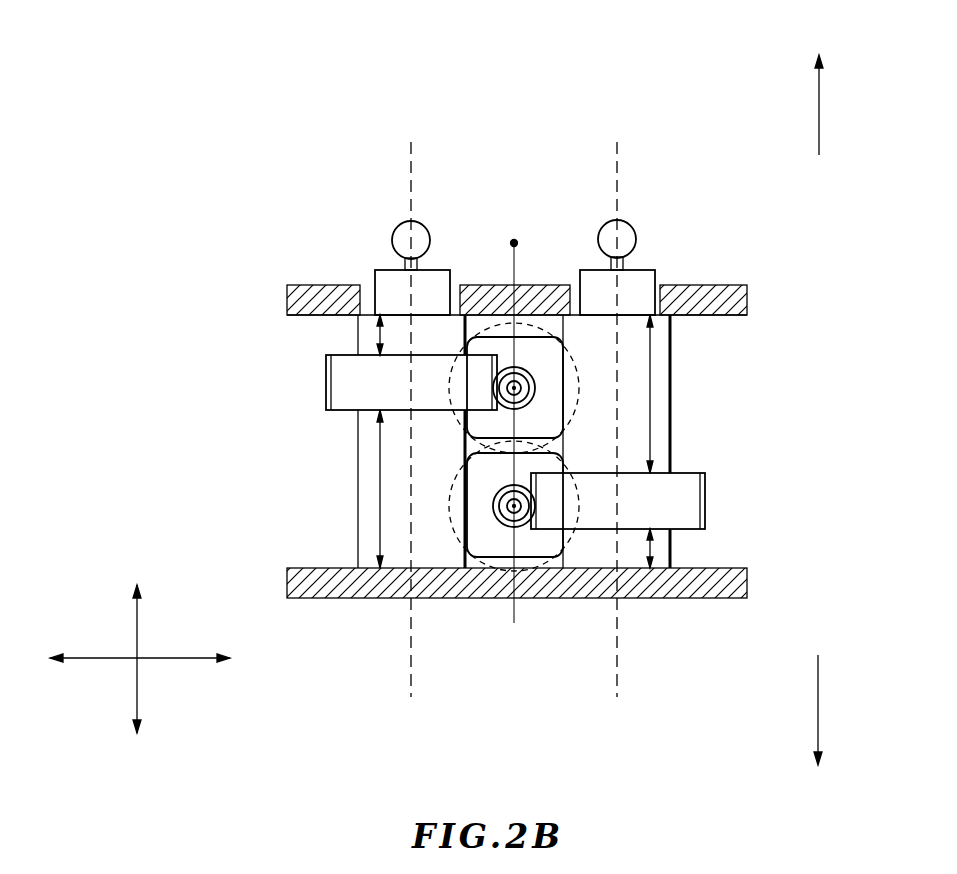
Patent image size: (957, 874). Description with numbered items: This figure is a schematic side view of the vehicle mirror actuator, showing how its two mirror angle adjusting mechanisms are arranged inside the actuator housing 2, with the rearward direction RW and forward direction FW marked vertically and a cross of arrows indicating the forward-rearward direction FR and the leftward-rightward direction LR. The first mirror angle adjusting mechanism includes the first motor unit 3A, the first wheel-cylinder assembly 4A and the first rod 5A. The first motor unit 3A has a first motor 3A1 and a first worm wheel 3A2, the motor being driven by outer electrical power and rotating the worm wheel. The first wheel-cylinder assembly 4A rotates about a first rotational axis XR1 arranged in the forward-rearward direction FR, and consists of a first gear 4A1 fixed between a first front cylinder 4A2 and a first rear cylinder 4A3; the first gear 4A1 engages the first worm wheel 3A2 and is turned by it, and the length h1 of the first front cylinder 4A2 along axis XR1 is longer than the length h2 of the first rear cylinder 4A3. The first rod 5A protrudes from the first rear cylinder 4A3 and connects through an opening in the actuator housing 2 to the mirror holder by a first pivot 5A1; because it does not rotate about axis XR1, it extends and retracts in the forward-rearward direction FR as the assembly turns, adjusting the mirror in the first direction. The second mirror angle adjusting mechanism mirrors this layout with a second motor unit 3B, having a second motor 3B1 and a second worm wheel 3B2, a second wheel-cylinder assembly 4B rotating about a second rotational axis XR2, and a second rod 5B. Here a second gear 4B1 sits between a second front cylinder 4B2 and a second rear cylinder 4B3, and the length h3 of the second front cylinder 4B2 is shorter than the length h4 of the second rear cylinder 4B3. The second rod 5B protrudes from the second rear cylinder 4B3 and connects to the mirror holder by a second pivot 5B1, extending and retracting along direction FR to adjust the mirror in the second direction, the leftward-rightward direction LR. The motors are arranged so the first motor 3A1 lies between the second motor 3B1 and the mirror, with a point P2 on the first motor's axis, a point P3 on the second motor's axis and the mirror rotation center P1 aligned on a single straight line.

The actuator housing 2 is at (733, 285).
The first motor unit 3A is at (542, 136).
The first motor 3A1 is at (507, 343).
The first worm wheel 3A2 is at (498, 362).
The second motor unit 3B is at (593, 673).
The second motor 3B1 is at (523, 557).
The second worm wheel 3B2 is at (538, 528).
The first wheel-cylinder assembly 4A is at (227, 322).
The first gear 4A1 is at (326, 392).
The first front cylinder 4A2 is at (360, 510).
The first rear cylinder 4A3 is at (355, 333).
The second wheel-cylinder assembly 4B is at (790, 343).
The second gear 4B1 is at (705, 495).
The second front cylinder 4B2 is at (672, 553).
The second rear cylinder 4B3 is at (672, 360).
The first rod 5A is at (388, 278).
The first pivot 5A1 is at (404, 231).
The second rod 5B is at (592, 276).
The second pivot 5B1 is at (628, 236).
The rotation center of the mirror P1 is at (514, 243).
The point on the first rotational axis of the first motor P2 is at (530, 382).
The point on the second rotational axis of the second motor P3 is at (505, 505).
The length of the first front cylinder h1 is at (380, 463).
The length of the first rear cylinder h2 is at (380, 343).
The length of the second front cylinder h3 is at (648, 545).
The length of the second rear cylinder h4 is at (650, 417).
The first rotational axis of the first wheel-cylinder assembly XR1 is at (413, 423).
The second rotational axis of the second wheel-cylinder assembly XR2 is at (619, 423).
The rearward direction RW is at (821, 94).
The forward direction FW is at (821, 725).
The forward-rearward direction FR is at (137, 632).
The leftward-rightward direction LR is at (104, 660).